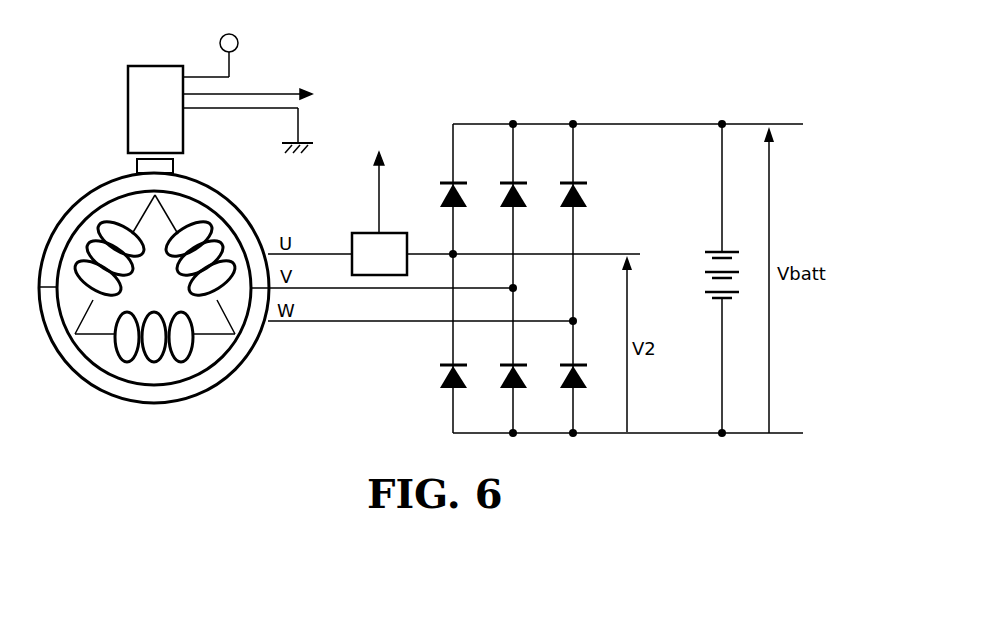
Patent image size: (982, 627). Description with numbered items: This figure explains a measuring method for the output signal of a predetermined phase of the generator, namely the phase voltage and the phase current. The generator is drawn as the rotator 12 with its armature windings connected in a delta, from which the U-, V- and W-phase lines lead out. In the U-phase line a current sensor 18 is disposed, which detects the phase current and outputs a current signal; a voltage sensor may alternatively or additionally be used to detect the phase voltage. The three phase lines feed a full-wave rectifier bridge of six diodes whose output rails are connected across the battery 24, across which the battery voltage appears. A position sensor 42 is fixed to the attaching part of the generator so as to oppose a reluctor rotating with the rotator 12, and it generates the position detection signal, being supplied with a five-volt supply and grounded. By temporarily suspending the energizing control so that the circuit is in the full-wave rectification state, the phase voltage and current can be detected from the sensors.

The rotator 12 is at (222, 385).
The current sensor 18 is at (362, 233).
The battery 24 is at (712, 250).
The position sensor 42 is at (127, 90).